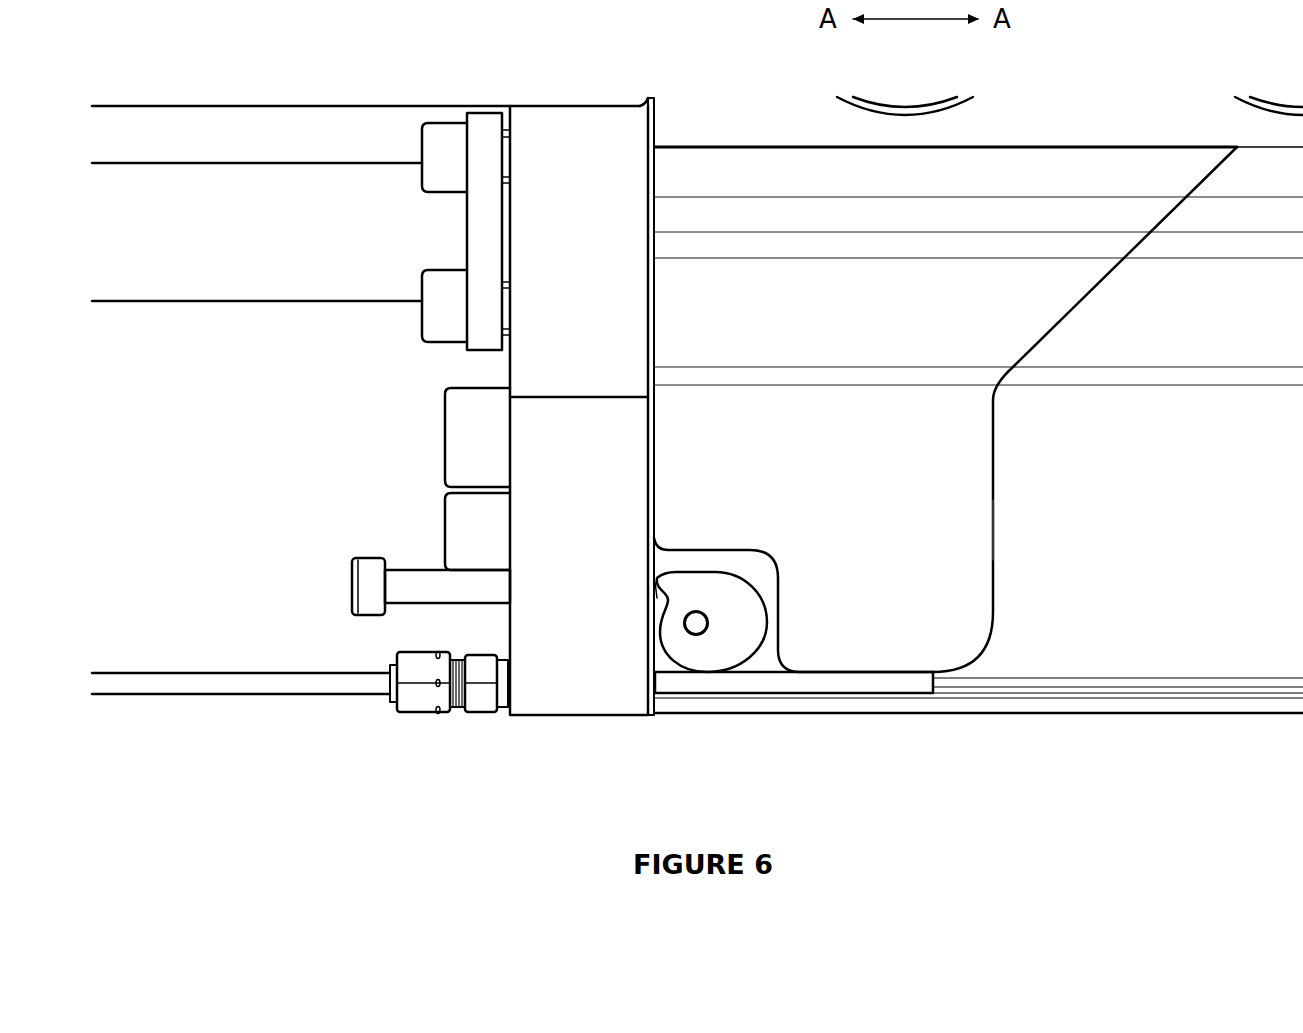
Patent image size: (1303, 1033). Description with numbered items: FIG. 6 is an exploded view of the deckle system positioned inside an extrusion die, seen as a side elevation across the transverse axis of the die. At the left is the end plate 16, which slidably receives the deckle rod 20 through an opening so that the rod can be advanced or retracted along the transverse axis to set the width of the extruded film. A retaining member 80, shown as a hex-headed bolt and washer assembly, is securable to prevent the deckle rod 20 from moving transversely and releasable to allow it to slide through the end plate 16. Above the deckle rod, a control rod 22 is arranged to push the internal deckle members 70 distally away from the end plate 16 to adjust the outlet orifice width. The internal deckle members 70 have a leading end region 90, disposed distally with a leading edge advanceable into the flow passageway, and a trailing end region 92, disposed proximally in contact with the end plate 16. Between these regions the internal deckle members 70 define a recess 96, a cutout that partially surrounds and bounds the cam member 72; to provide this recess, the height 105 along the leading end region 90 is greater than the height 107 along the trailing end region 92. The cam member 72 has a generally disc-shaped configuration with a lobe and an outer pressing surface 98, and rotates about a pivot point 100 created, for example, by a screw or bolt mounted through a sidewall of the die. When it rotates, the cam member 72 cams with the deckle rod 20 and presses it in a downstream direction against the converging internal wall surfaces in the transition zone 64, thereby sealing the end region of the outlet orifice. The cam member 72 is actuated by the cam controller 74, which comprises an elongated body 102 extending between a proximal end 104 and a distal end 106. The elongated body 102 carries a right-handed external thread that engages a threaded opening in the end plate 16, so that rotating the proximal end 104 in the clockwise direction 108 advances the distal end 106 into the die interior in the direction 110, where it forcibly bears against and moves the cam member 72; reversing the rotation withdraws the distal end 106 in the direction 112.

The end plate 16 is at (567, 682).
The deckle rod 20 is at (910, 682).
The control rod 22 is at (308, 244).
The transition zone 64 is at (1052, 676).
The internal deckle members 70 is at (1000, 533).
The cam member 72 is at (730, 672).
The cam controller 74 is at (368, 581).
The retaining member 80 is at (478, 695).
The leading end region 90 is at (994, 460).
The trailing end region 92 is at (652, 478).
The recess 96 is at (757, 578).
The outer pressing surface 98 is at (740, 622).
The pivot point 100 is at (696, 623).
The elongated body 102 is at (442, 585).
The proximal end 104 is at (363, 608).
The height 105 is at (972, 650).
The distal end 106 is at (650, 598).
The height 107 is at (762, 548).
The clockwise direction 108 is at (162, 540).
The direction 110 is at (283, 542).
The direction 112 is at (362, 512).